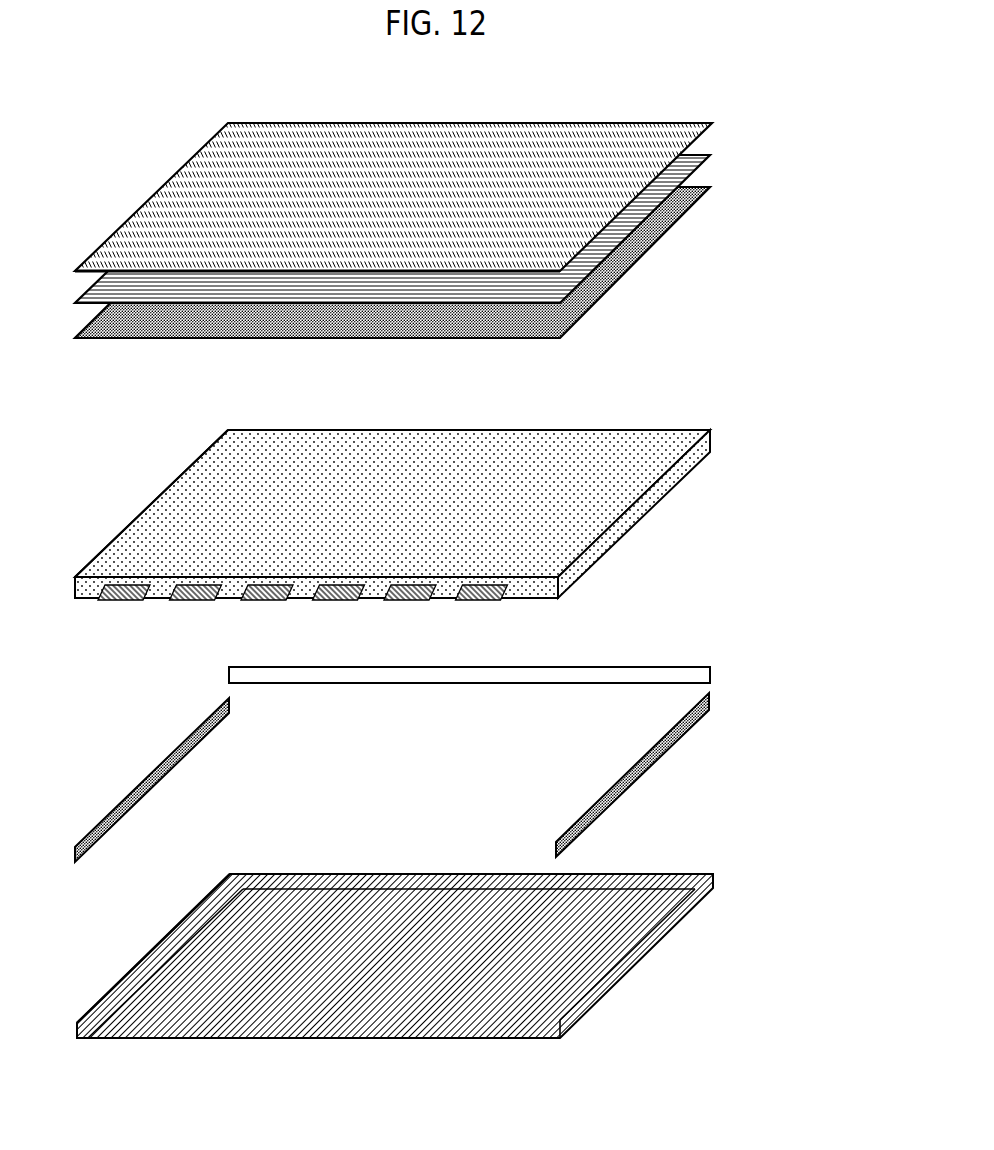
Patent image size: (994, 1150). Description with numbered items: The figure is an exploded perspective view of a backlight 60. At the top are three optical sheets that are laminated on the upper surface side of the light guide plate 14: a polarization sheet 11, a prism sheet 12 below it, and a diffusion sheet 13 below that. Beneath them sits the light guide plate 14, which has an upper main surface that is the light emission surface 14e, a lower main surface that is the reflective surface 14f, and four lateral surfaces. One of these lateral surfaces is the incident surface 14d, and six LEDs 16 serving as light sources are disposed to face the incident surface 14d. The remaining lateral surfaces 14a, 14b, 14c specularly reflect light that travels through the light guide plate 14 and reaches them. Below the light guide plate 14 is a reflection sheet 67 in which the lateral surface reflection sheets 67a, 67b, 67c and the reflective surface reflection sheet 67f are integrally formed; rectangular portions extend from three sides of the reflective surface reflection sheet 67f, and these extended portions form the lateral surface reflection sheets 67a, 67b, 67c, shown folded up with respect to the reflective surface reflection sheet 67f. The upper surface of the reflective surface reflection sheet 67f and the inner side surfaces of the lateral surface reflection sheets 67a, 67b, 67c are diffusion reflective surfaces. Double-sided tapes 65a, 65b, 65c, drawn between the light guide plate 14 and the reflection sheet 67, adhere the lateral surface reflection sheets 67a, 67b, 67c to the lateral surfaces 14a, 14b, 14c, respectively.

The backlight 60 is at (458, 204).
The polarization sheet 11 is at (712, 124).
The prism sheet 12 is at (710, 156).
The diffusion sheet 13 is at (710, 188).
The light guide plate 14 is at (400, 531).
The lateral surface 14a is at (627, 510).
The lateral surface 14b is at (471, 428).
The lateral surface 14c is at (212, 446).
The incident surface 14d is at (158, 590).
The light emission surface 14e is at (368, 438).
The reflective surface 14f is at (83, 598).
The LED 16 is at (120, 600).
The double-sided tape 65a is at (649, 768).
The double-sided tape 65b is at (643, 666).
The double-sided tape 65c is at (162, 763).
The reflection sheet 67 is at (399, 958).
The lateral surface reflection sheet 67a is at (660, 940).
The lateral surface reflection sheet 67b is at (647, 872).
The lateral surface reflection sheet 67c is at (160, 942).
The reflective surface reflection sheet 67f is at (282, 1022).